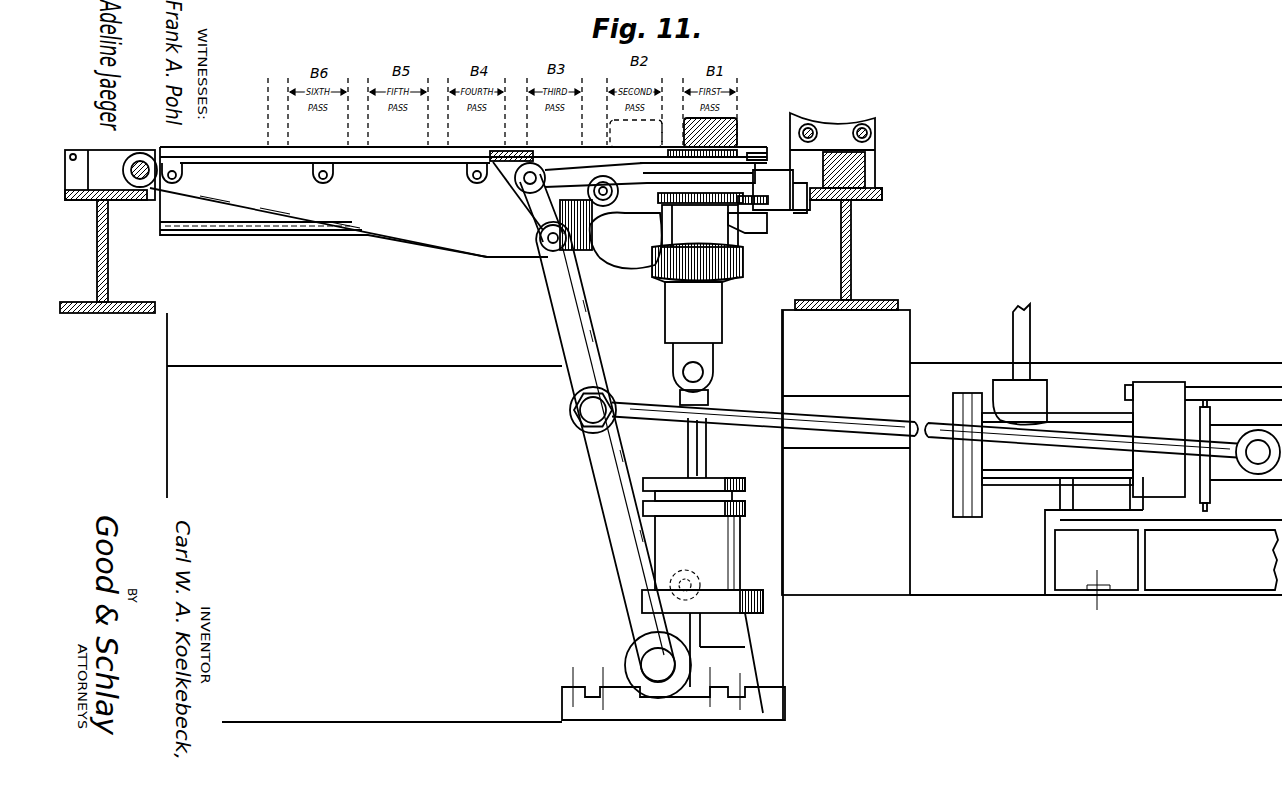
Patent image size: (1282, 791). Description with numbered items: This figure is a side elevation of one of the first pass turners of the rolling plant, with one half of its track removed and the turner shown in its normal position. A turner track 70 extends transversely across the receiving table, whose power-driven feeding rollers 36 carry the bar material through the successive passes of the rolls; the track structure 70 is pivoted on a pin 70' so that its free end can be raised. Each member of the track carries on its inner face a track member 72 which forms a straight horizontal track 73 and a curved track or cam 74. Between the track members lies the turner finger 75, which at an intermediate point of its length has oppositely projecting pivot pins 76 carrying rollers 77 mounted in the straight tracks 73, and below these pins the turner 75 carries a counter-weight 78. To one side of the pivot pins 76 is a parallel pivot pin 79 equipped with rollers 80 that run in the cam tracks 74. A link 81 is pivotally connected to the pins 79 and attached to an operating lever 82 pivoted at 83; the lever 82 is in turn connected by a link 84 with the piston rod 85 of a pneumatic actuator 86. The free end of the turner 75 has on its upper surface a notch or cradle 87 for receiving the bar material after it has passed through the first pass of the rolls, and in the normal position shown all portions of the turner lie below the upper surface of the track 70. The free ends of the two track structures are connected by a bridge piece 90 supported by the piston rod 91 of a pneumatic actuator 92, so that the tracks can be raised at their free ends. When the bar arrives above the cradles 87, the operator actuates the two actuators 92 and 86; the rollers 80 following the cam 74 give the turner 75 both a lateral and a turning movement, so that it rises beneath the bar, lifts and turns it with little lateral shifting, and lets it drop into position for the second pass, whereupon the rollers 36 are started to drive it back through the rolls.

The pin 70' is at (108, 231).
The feeding rollers 36 is at (272, 232).
The track member 72 is at (375, 215).
The turner track 70 is at (354, 210).
The pivot pin 79 is at (540, 192).
The rollers 80 is at (515, 181).
The link 81 is at (540, 216).
The operating lever 82 is at (566, 311).
The pivot 83 is at (655, 665).
The turner finger 75 is at (676, 188).
The straight horizontal track 73 is at (740, 228).
The pivot pins 76 is at (598, 250).
The rollers 77 is at (623, 220).
The counter-weight 78 is at (640, 262).
The curved track or cam 74 is at (680, 268).
The notch or cradle 87 is at (703, 163).
The bridge piece 90 is at (722, 333).
The piston rod 91 is at (704, 466).
The pneumatic actuator 92 is at (737, 562).
The link 84 is at (877, 432).
The piston rod 85 is at (1246, 470).
The pneumatic actuator 86 is at (1077, 413).